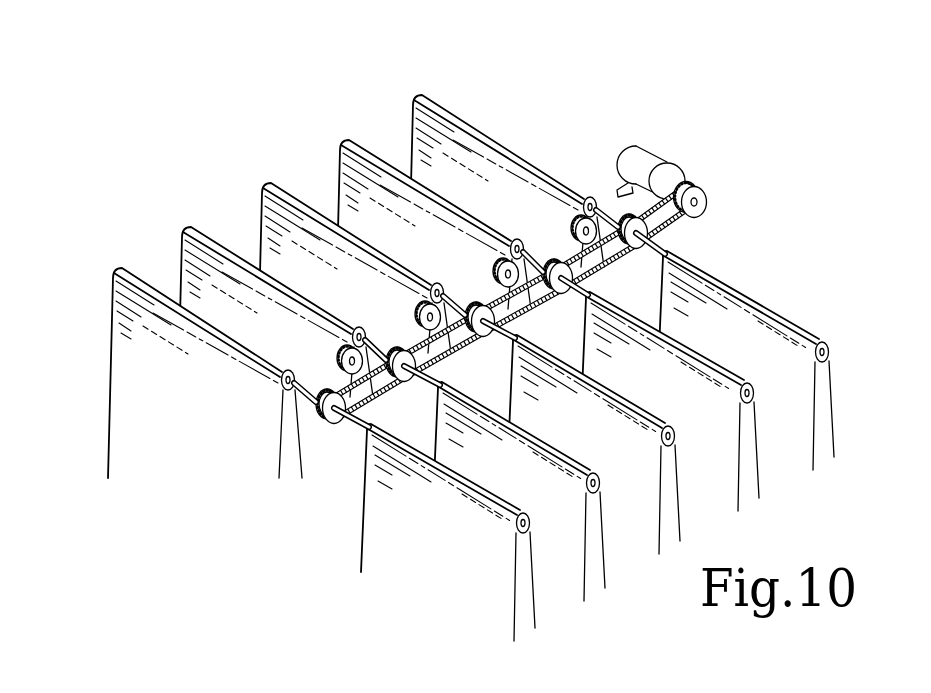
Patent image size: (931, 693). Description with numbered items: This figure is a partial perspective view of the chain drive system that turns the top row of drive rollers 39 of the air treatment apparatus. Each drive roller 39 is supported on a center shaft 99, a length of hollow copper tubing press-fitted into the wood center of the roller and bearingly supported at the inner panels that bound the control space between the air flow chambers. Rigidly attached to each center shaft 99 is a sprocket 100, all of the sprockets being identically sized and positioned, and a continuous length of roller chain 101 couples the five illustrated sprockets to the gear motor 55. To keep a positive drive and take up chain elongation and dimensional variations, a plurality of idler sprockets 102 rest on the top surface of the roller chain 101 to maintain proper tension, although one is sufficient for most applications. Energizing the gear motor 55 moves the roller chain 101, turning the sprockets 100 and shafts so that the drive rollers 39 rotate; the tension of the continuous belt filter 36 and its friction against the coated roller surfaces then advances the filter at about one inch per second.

The continuous belt filter 36 is at (122, 374).
The drive roller 39 is at (415, 92).
The gear motor 55 is at (644, 162).
The center shaft 99 is at (347, 425).
The sprocket 100 is at (323, 423).
The roller chain 101 is at (331, 424).
The idler sprocket 102 is at (346, 352).